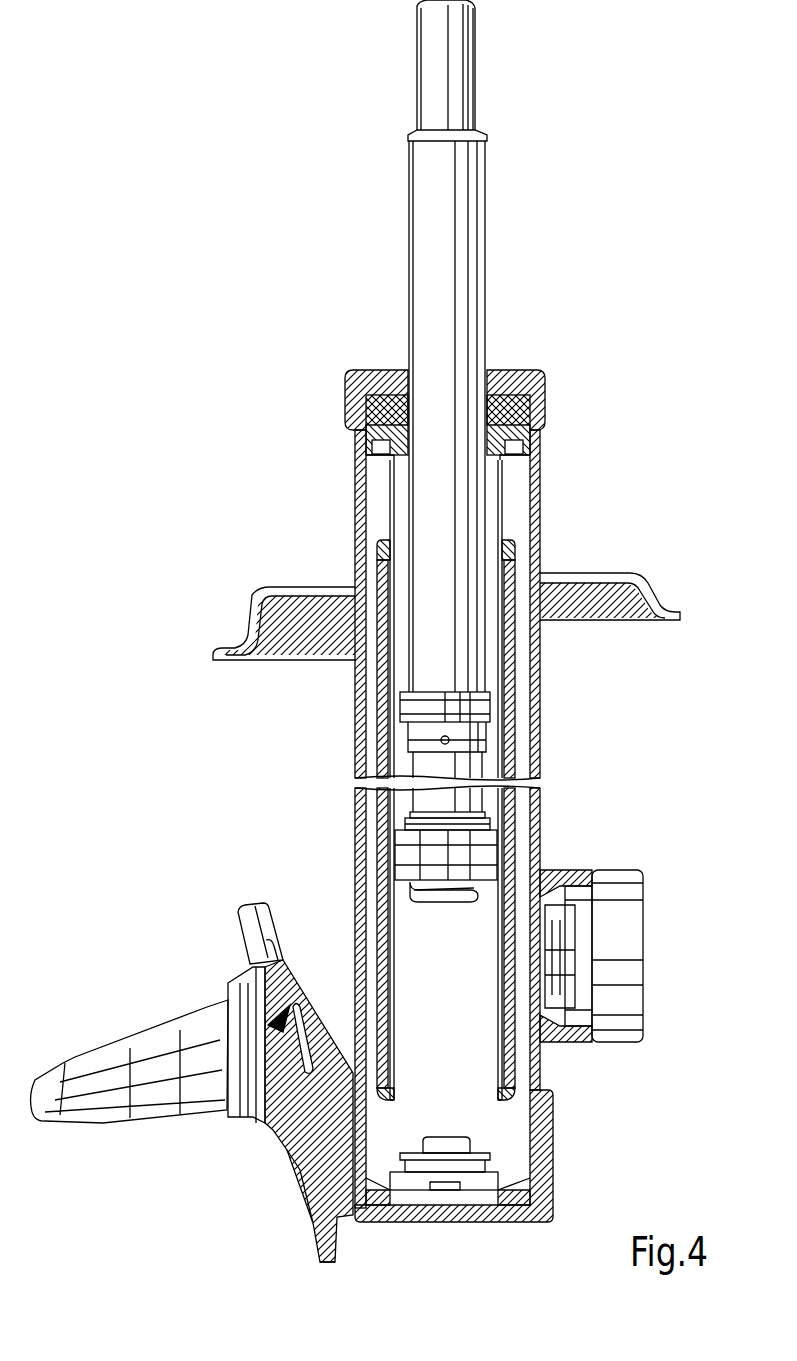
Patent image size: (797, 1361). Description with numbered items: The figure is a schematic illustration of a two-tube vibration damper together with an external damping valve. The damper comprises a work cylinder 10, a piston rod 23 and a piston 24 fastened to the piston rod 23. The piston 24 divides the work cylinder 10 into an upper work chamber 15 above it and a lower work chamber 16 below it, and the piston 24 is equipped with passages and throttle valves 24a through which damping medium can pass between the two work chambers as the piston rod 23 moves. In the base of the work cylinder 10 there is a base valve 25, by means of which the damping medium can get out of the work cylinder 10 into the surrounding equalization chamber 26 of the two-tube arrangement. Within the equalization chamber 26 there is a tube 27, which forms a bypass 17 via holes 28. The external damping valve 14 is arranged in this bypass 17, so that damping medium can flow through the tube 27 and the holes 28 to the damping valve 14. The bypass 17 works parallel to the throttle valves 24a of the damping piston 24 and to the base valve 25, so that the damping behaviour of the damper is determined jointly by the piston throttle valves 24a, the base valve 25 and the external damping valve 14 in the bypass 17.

The piston rod 23 is at (440, 300).
The work cylinder 10 is at (500, 503).
The upper work chamber 15 is at (490, 530).
The holes 28 is at (545, 573).
The tube 27 is at (515, 647).
The equalization chamber 26 is at (523, 683).
The bypass 17 is at (510, 738).
The throttle valves 24a is at (480, 848).
The piston 24 is at (497, 850).
The damping valve 14 is at (625, 940).
The lower work chamber 16 is at (475, 1131).
The base valve 25 is at (480, 1182).